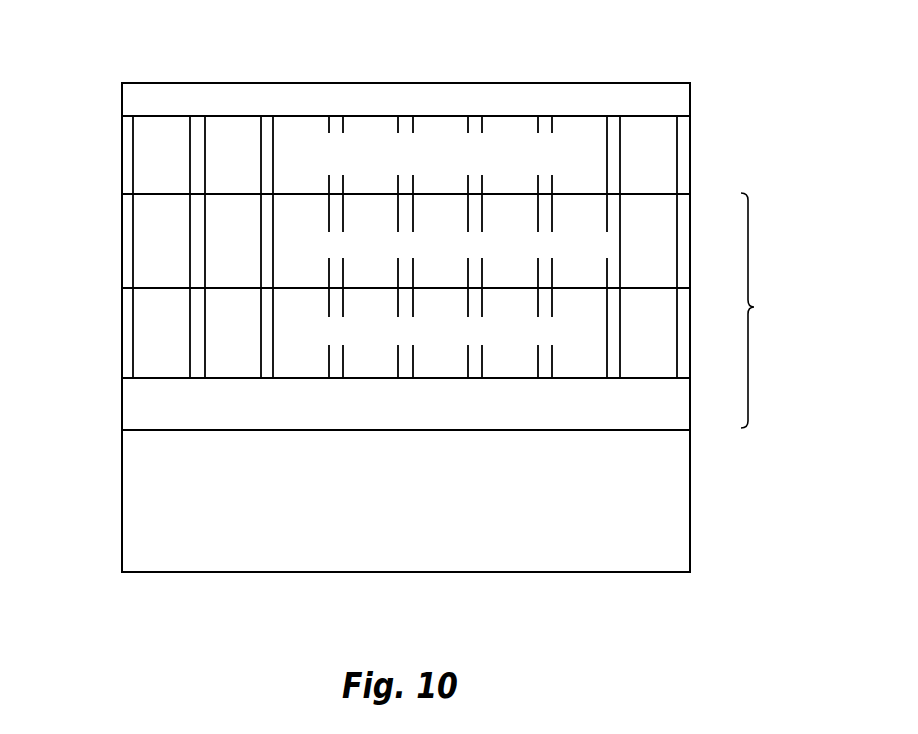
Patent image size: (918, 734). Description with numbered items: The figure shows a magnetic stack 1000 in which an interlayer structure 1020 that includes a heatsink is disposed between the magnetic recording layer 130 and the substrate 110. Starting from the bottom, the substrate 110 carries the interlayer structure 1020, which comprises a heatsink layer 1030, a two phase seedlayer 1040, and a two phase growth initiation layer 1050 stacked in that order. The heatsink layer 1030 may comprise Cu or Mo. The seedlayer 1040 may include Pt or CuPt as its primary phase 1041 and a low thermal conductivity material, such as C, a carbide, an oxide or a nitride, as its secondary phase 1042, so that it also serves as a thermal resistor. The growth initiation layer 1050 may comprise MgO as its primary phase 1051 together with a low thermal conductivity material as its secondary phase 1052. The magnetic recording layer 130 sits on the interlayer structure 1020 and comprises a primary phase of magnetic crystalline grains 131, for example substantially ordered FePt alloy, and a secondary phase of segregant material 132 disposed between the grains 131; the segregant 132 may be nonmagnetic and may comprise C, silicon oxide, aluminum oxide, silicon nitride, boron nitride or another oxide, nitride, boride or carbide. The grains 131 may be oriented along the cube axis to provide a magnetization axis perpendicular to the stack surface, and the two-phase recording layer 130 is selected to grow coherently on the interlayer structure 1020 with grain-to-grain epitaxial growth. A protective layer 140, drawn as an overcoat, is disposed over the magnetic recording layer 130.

The magnetic recording medium 1000 is at (361, 57).
The protective layer 140 is at (684, 98).
The magnetic recording layer 130 is at (690, 148).
The segregant material 132 is at (127, 145).
The magnetic crystalline grains 131 is at (147, 143).
The two phase growth initiation layer 1050 is at (690, 238).
The secondary phase of growth initiation layer 1052 is at (127, 245).
The primary phase of growth initiation layer 1051 is at (143, 245).
The two phase seedlayer 1040 is at (690, 311).
The secondary phase of seedlayer 1042 is at (127, 345).
The primary phase of seedlayer 1041 is at (143, 345).
The heatsink layer 1030 is at (690, 393).
The interlayer structure 1020 is at (803, 310).
The substrate 110 is at (676, 498).